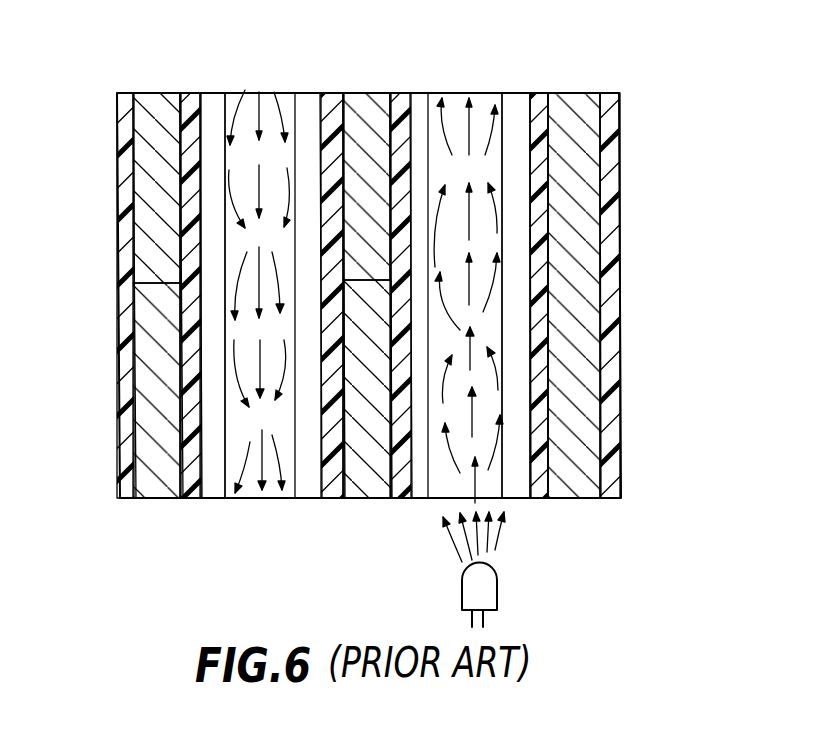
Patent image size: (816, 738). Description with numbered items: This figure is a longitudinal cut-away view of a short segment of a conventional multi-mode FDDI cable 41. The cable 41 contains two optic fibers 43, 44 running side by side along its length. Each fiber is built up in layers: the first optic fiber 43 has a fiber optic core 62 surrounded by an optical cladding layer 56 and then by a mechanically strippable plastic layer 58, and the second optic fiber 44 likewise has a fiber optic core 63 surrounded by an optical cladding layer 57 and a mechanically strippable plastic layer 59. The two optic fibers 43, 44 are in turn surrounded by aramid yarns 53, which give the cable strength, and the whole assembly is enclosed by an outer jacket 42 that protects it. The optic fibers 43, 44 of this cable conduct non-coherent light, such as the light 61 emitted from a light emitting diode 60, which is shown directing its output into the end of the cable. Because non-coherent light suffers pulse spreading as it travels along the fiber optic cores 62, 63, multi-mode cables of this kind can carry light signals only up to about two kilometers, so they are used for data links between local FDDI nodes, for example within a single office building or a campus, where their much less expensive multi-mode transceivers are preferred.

The multi-mode cable 41 is at (623, 239).
The outer jacket 42 is at (613, 412).
The optic fiber 43 is at (548, 80).
The optic fiber 44 is at (337, 80).
The aramid yarns 53 is at (150, 153).
The optical cladding layer 56 is at (518, 193).
The optical cladding layer 57 is at (210, 423).
The mechanically strippable plastic layer 58 is at (547, 362).
The mechanically strippable plastic layer 59 is at (190, 242).
The light emitting diode 60 is at (493, 592).
The light rays 61 is at (502, 537).
The fiber optic core 62 is at (490, 100).
The fiber optic core 63 is at (287, 95).